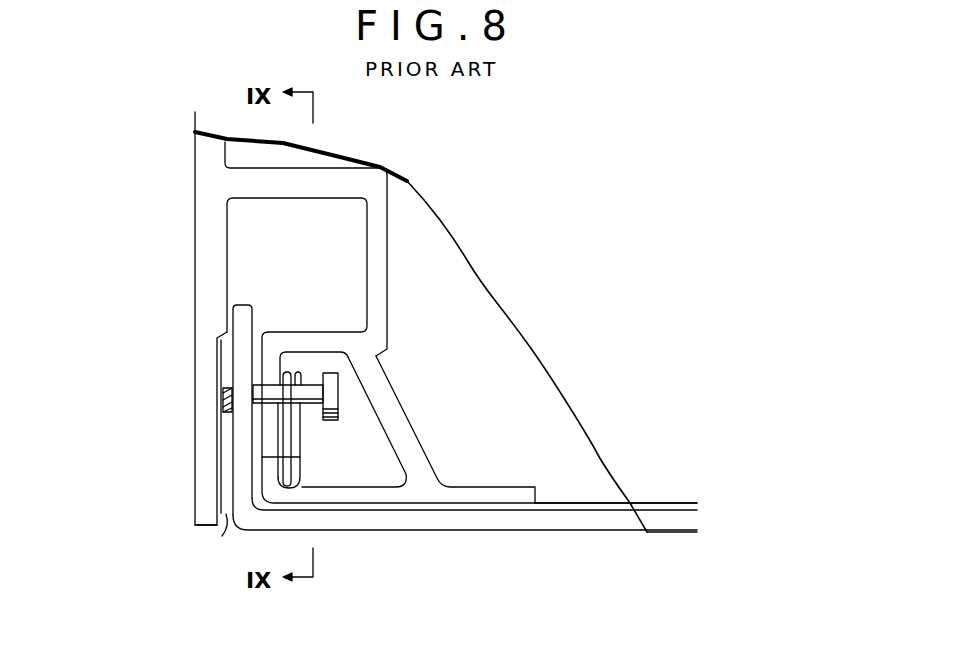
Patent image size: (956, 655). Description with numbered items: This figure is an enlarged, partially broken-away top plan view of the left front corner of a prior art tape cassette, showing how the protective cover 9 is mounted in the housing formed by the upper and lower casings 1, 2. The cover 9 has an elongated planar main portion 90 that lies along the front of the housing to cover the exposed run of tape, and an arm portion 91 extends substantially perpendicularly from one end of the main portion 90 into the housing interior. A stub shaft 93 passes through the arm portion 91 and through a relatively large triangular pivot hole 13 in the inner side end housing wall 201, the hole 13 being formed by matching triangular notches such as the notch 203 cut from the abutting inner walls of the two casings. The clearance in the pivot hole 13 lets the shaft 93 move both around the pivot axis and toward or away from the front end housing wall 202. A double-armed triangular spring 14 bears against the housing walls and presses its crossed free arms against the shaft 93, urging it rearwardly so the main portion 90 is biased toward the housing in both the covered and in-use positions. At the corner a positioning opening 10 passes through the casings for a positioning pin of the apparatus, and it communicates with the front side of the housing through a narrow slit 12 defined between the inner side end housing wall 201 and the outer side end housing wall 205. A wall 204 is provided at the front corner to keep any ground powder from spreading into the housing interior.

The upper casing 1 is at (197, 121).
The lower casing 2 is at (194, 178).
The positioning opening 10 is at (238, 232).
The arm portion 91 is at (245, 317).
The stub shaft 93 is at (332, 388).
The triangular notch 203 is at (262, 430).
The pivot hole 13 is at (268, 444).
The spring 14 is at (300, 443).
The inner side end housing wall 201 is at (262, 476).
The wall 204 is at (407, 457).
The outer side end housing wall 205 is at (207, 510).
The slit 12 is at (222, 534).
The front end housing wall 202 is at (345, 494).
The main portion 90 is at (487, 523).
The protective cover 9 is at (572, 530).